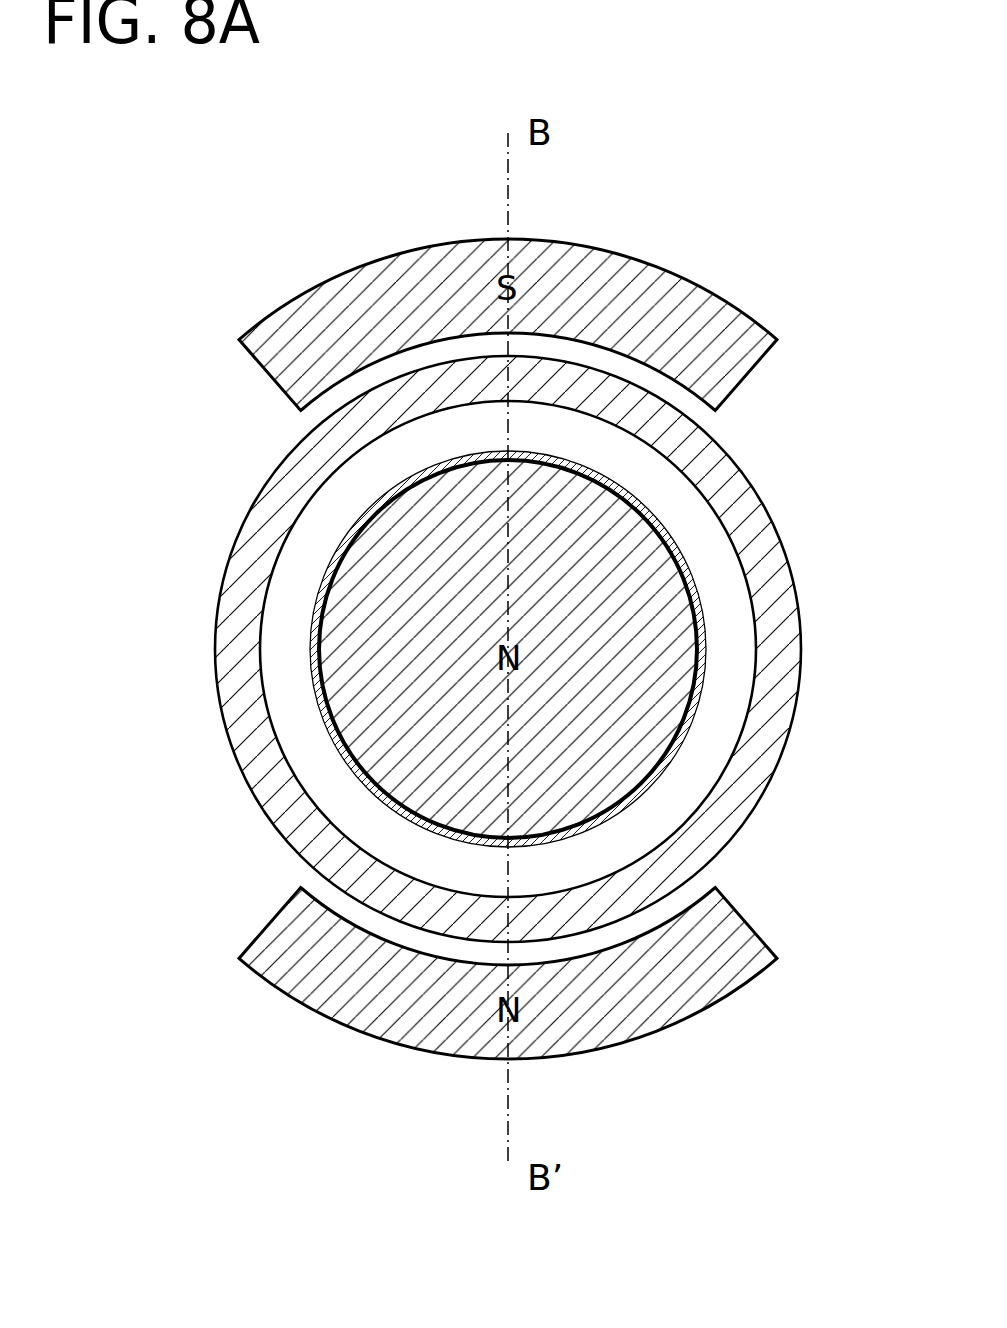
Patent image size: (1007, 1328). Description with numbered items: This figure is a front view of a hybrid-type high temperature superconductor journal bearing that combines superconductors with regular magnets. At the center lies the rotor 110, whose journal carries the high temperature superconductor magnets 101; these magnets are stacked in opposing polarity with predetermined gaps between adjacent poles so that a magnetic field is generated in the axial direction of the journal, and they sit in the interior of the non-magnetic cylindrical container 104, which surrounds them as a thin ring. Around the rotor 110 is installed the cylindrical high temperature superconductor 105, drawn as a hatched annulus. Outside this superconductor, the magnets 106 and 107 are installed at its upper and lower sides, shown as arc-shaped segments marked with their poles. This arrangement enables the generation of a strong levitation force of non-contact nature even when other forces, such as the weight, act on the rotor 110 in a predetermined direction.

The high temperature superconductor magnets 101 is at (338, 673).
The non-magnetic cylindrical container 104 is at (705, 648).
The cylindrical high temperature superconductor 105 is at (762, 510).
The magnet 106 is at (673, 278).
The magnet 107 is at (688, 1012).
The rotor 110 is at (292, 568).